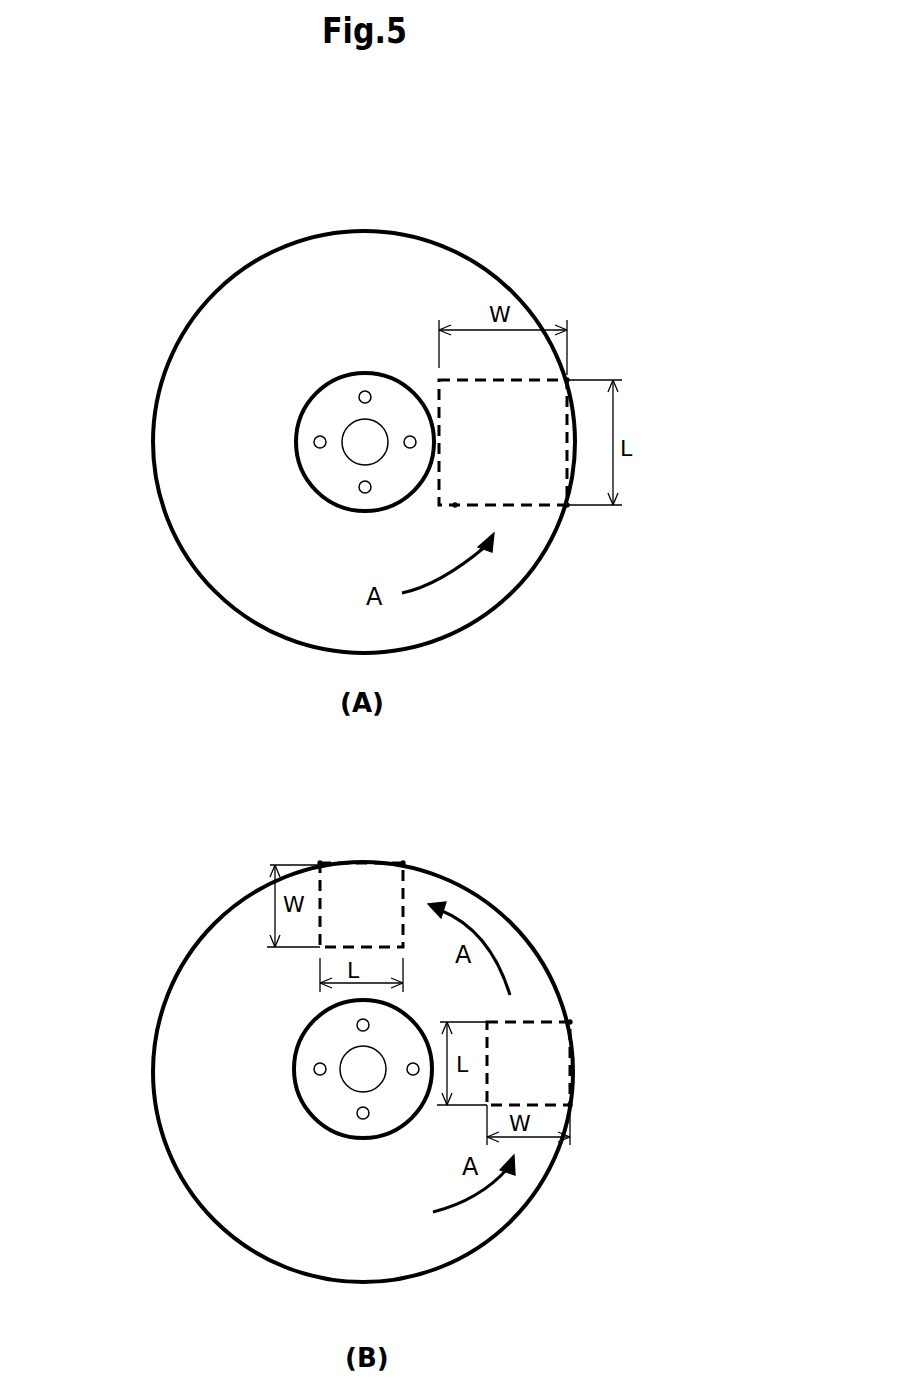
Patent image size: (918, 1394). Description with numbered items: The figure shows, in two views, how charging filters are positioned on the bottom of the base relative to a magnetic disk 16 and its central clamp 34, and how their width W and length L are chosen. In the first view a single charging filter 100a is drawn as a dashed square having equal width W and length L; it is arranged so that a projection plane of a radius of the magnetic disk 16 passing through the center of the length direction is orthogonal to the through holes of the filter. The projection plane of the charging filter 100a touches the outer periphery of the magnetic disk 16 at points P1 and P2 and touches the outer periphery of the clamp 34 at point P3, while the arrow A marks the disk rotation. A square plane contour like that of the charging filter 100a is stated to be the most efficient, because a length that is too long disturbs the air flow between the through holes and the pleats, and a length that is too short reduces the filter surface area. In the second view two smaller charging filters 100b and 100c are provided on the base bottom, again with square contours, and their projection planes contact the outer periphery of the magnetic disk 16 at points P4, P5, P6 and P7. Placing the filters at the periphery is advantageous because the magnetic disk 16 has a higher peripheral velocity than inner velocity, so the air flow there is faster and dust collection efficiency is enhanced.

The magnetic disk 16 is at (538, 312).
The clamp 34 is at (320, 415).
The charging filter 100a is at (473, 427).
The charging filter 100b is at (360, 905).
The charging filter 100c is at (530, 1065).
The point P1 is at (568, 378).
The point P2 is at (568, 507).
The point P3 is at (455, 492).
The point P4 is at (570, 1022).
The point P5 is at (570, 1105).
The point P6 is at (323, 865).
The point P7 is at (405, 862).